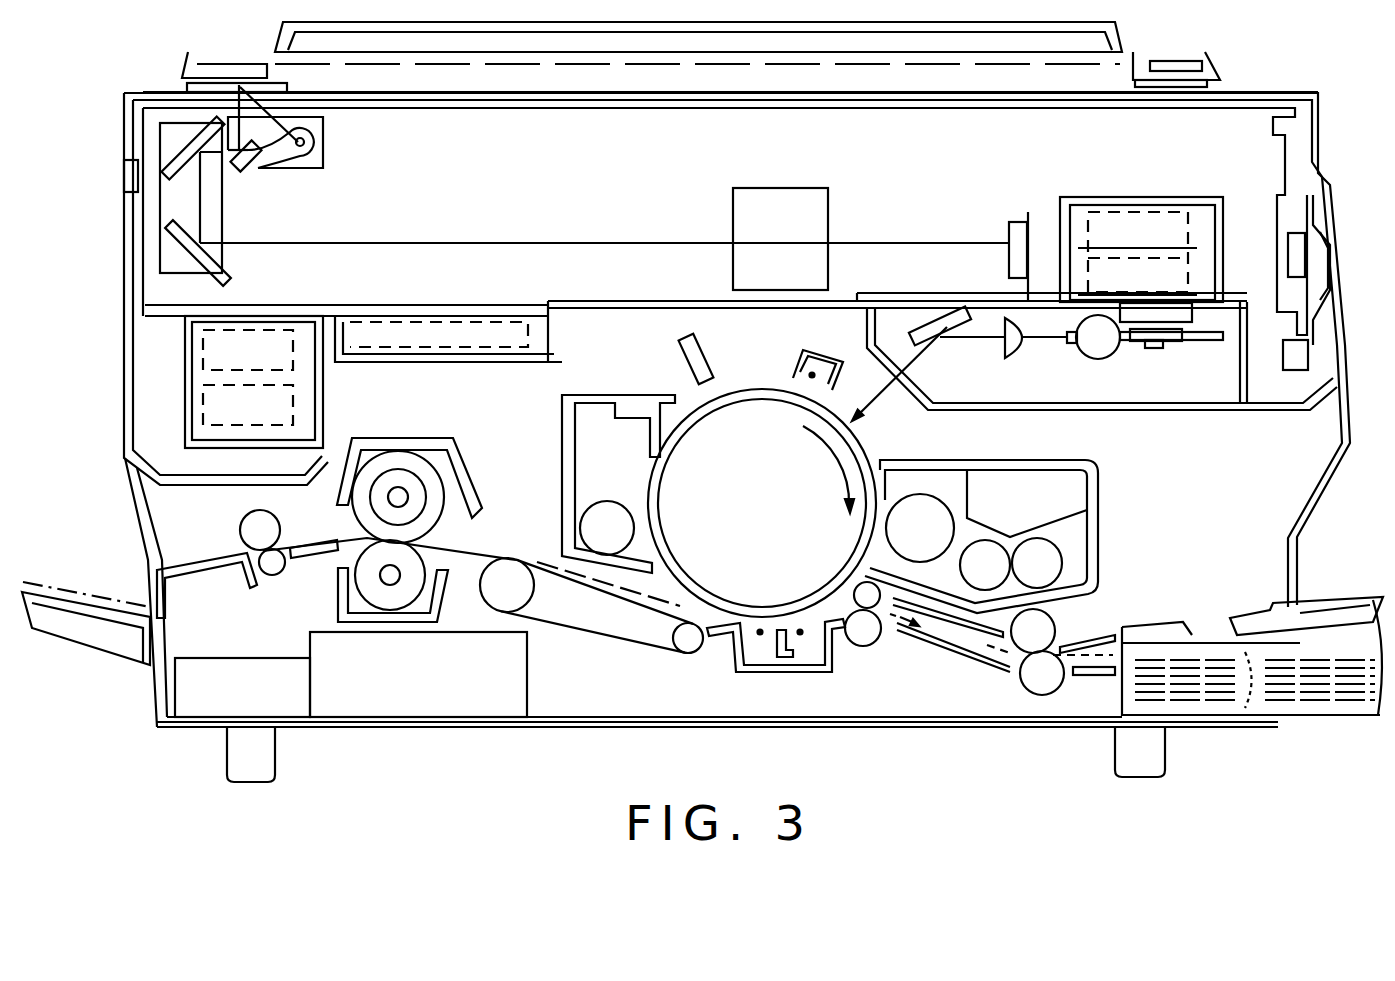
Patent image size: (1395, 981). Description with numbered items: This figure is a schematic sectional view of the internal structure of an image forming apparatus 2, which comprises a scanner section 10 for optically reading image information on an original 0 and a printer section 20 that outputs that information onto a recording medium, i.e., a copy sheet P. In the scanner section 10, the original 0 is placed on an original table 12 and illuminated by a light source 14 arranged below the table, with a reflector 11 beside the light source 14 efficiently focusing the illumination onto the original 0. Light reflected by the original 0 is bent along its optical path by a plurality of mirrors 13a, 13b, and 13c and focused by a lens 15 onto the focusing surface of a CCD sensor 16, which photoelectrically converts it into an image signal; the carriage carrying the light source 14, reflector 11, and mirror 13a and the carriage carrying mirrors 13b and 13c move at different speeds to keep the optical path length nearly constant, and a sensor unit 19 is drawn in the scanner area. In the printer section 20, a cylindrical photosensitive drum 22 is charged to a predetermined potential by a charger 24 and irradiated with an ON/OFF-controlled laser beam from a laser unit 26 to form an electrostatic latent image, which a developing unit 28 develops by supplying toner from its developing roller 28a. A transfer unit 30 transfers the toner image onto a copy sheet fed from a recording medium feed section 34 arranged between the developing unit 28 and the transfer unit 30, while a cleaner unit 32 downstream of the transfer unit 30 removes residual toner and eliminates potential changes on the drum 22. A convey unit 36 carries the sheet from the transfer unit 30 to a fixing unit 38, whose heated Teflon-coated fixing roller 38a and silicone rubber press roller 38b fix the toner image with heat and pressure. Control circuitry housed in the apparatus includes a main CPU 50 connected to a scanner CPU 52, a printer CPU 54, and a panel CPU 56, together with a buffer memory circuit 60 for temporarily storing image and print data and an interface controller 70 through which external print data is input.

The original 0 is at (508, 100).
The image forming apparatus 2 is at (1330, 487).
The scanner section 10 is at (152, 86).
The reflector 11 is at (312, 158).
The original table 12 is at (645, 108).
The mirror 13a is at (257, 170).
The mirror 13b is at (170, 152).
The mirror 13c is at (230, 273).
The light source 14 is at (297, 125).
The lens 15 is at (790, 188).
The CCD sensor 16 is at (1018, 230).
The CCD image sensor 19 is at (1120, 210).
The printer section 20 is at (667, 727).
The photosensitive drum 22 is at (747, 390).
The charger 24 is at (808, 347).
The laser unit 26 is at (1183, 415).
The developing unit 28 is at (1098, 543).
The developing roller 28a is at (915, 510).
The transfer unit 30 is at (758, 668).
The cleaner unit 32 is at (565, 453).
The recording medium feed section 34 is at (1367, 603).
The convey unit 36 is at (572, 617).
The fixing unit 38 is at (468, 482).
The fixing roller 38a is at (382, 507).
The press roller 38b is at (365, 580).
The main CPU 50 is at (339, 403).
The buffer memory circuit 60 is at (339, 403).
The interface controller 70 is at (293, 407).
The scanner CPU 52 is at (1188, 272).
The printer CPU 54 is at (562, 333).
The panel CPU 56 is at (202, 348).
The recording paper P is at (1303, 657).